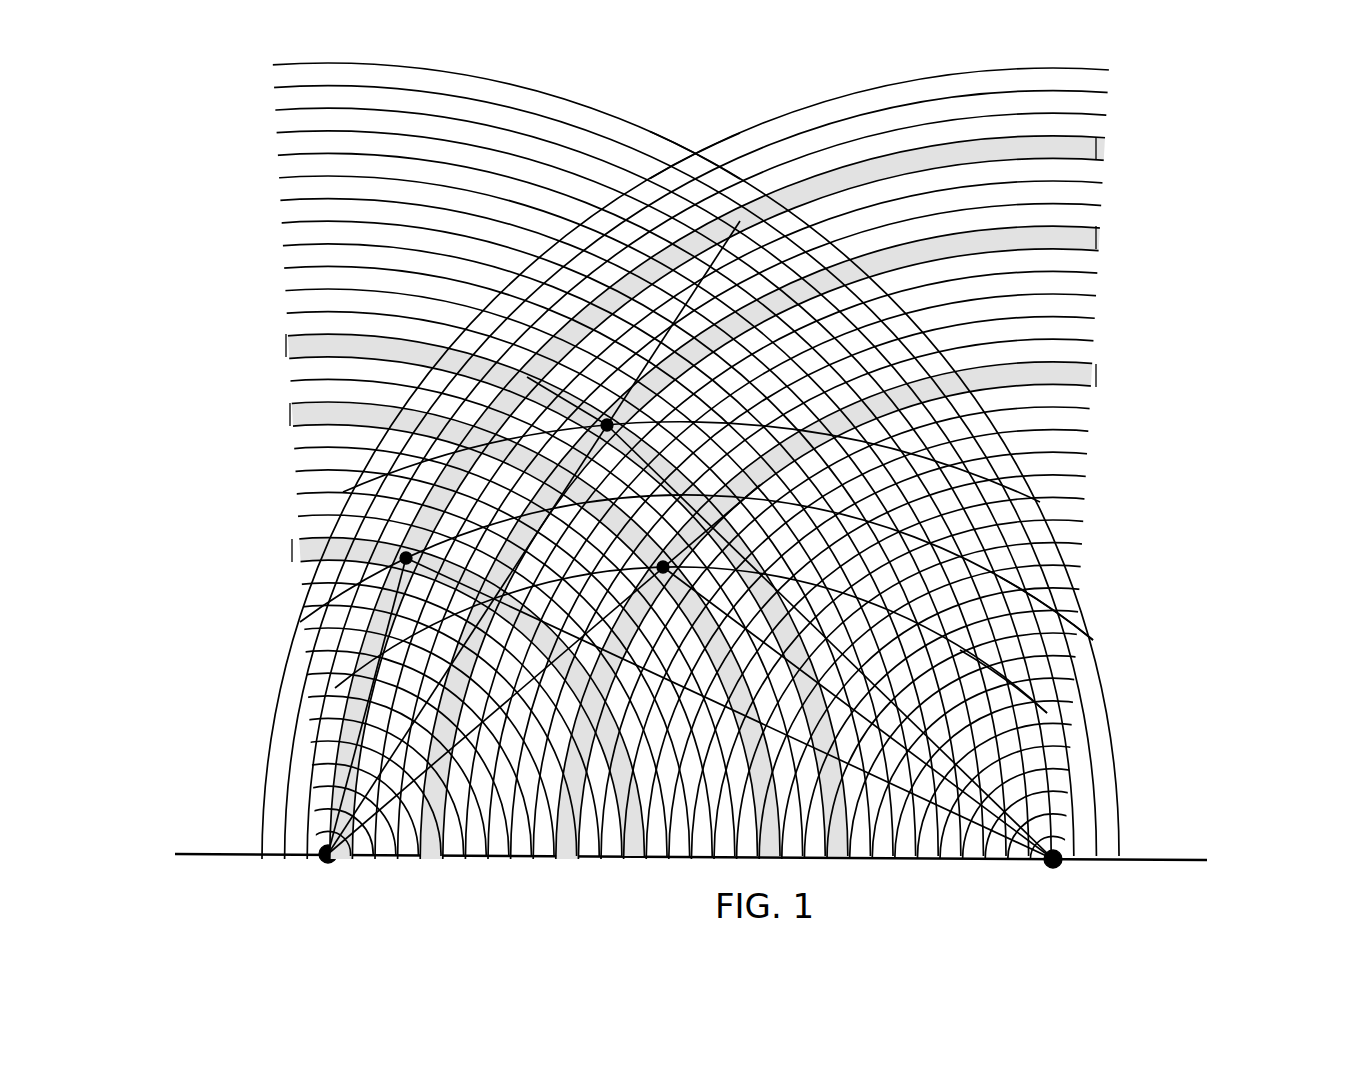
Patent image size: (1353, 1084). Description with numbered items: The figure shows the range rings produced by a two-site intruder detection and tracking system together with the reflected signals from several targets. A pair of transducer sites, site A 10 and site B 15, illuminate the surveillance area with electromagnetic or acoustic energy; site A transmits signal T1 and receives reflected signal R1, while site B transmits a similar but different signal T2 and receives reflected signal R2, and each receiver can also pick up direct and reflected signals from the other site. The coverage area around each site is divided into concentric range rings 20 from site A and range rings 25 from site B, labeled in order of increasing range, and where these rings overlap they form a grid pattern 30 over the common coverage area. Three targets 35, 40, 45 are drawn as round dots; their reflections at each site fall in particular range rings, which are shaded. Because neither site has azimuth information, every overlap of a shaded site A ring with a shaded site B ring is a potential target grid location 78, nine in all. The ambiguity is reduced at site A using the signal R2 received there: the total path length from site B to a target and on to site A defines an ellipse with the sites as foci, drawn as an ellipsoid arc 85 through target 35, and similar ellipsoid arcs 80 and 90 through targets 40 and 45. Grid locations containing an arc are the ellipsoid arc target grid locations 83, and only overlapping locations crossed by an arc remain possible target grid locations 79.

The site A 10 is at (328, 856).
The site B 15 is at (1053, 861).
The range rings from site A 20 is at (262, 74).
The range rings from site B 25 is at (1106, 78).
The grid pattern 30 is at (695, 160).
The target 35 is at (400, 554).
The target 40 is at (663, 570).
The target 45 is at (607, 423).
The overlapping shaded grid locations 78 is at (527, 377).
The possible target grid locations 79 is at (560, 575).
The ellipsoid arc 80 is at (1047, 713).
The ellipsoid arc target grid locations 83 is at (295, 593).
The ellipsoid arc 85 is at (1093, 640).
The ellipsoid arc 90 is at (1040, 500).